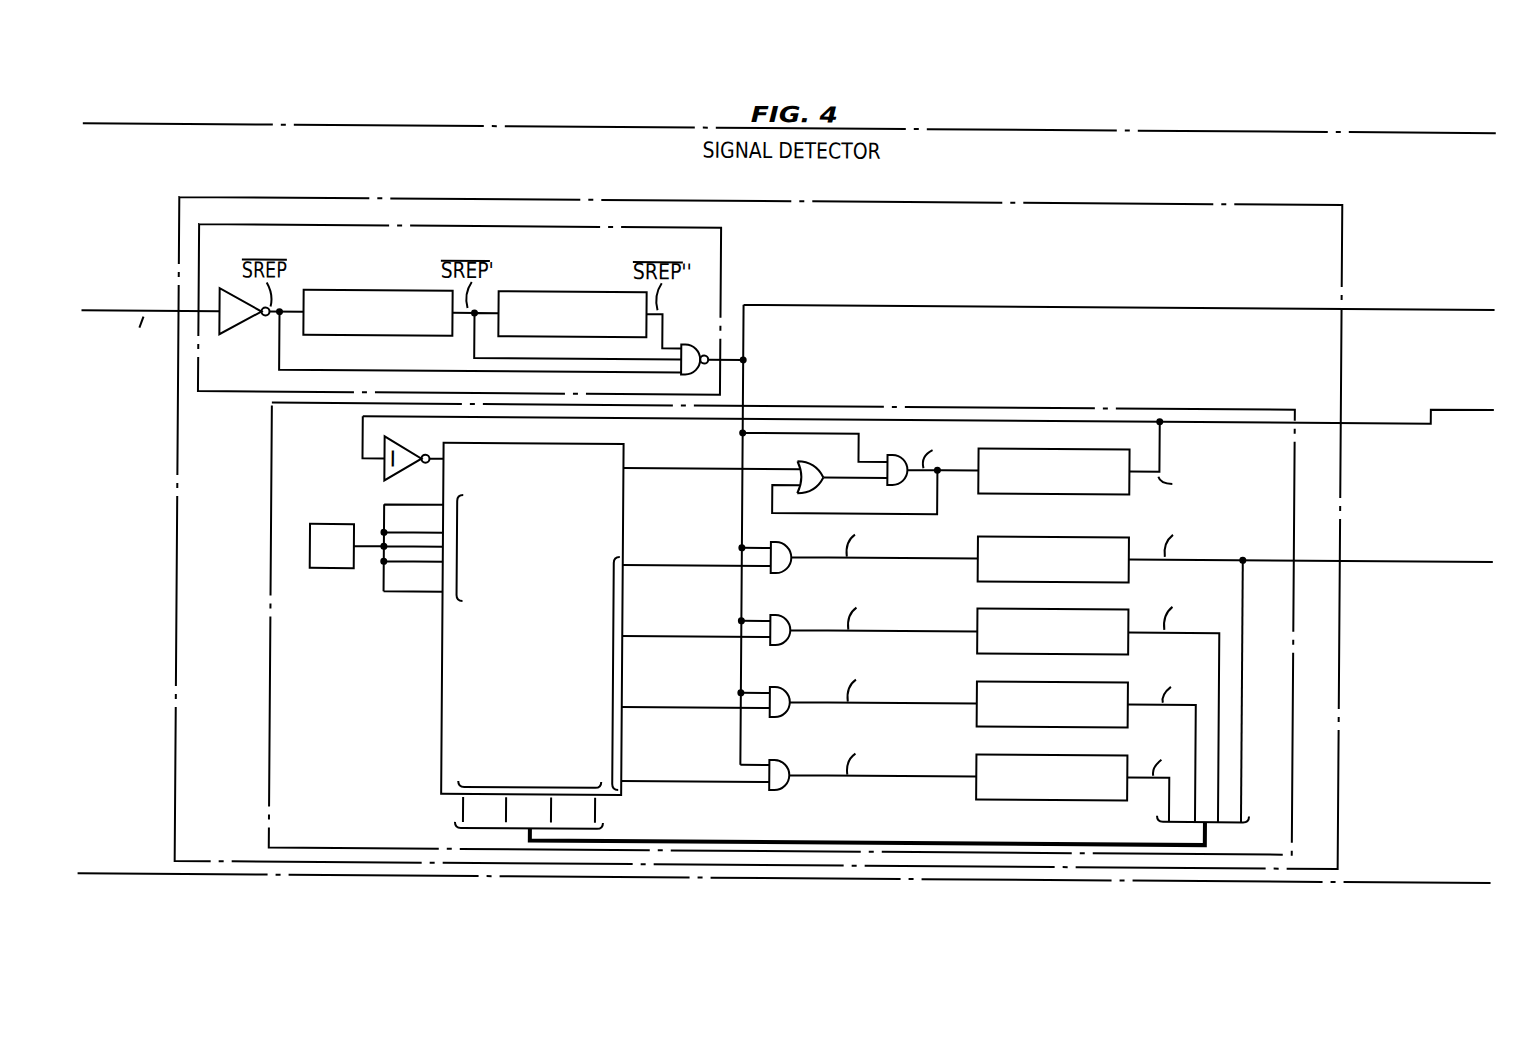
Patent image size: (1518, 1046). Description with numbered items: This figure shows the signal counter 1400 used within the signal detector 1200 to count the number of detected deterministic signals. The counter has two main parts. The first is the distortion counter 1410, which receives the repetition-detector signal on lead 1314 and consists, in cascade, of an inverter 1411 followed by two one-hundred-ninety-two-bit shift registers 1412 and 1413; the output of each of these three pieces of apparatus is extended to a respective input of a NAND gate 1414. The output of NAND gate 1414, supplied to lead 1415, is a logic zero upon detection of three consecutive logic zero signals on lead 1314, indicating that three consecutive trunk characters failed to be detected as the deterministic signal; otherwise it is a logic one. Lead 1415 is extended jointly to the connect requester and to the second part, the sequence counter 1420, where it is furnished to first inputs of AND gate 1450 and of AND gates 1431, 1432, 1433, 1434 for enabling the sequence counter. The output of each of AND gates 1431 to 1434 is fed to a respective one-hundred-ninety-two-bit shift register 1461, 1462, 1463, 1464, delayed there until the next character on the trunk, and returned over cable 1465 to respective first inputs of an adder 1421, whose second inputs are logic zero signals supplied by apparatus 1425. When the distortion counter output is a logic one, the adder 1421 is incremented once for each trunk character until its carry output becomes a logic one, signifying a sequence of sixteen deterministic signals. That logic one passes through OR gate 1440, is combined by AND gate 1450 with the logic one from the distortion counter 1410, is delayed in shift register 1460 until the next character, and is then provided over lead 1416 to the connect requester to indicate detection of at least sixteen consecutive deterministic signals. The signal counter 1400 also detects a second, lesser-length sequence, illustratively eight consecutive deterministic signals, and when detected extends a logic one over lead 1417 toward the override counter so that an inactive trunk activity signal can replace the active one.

The signal detector 1200 is at (1072, 111).
The lead 1314 is at (105, 296).
The signal counter 1400 is at (1075, 178).
The distortion counter 1410 is at (447, 210).
The inverter 1411 is at (243, 324).
The shift register 1412 is at (390, 340).
The shift register 1413 is at (568, 339).
The NAND gate 1414 is at (690, 345).
The lead 1415 is at (1390, 303).
The lead 1416 is at (1392, 418).
The lead 1417 is at (1392, 556).
The sequence counter 1420 is at (271, 756).
The adder 1421 is at (532, 429).
The apparatus 1425 is at (326, 526).
The AND gate 1431 is at (789, 541).
The AND gate 1432 is at (788, 616).
The AND gate 1433 is at (788, 688).
The AND gate 1434 is at (788, 761).
The OR gate 1440 is at (806, 461).
The AND gate 1450 is at (905, 446).
The shift register 1460 is at (1053, 437).
The shift register 1461 is at (1057, 524).
The shift register 1462 is at (1049, 608).
The shift register 1463 is at (1049, 681).
The shift register 1464 is at (1049, 754).
The cable 1465 is at (850, 841).